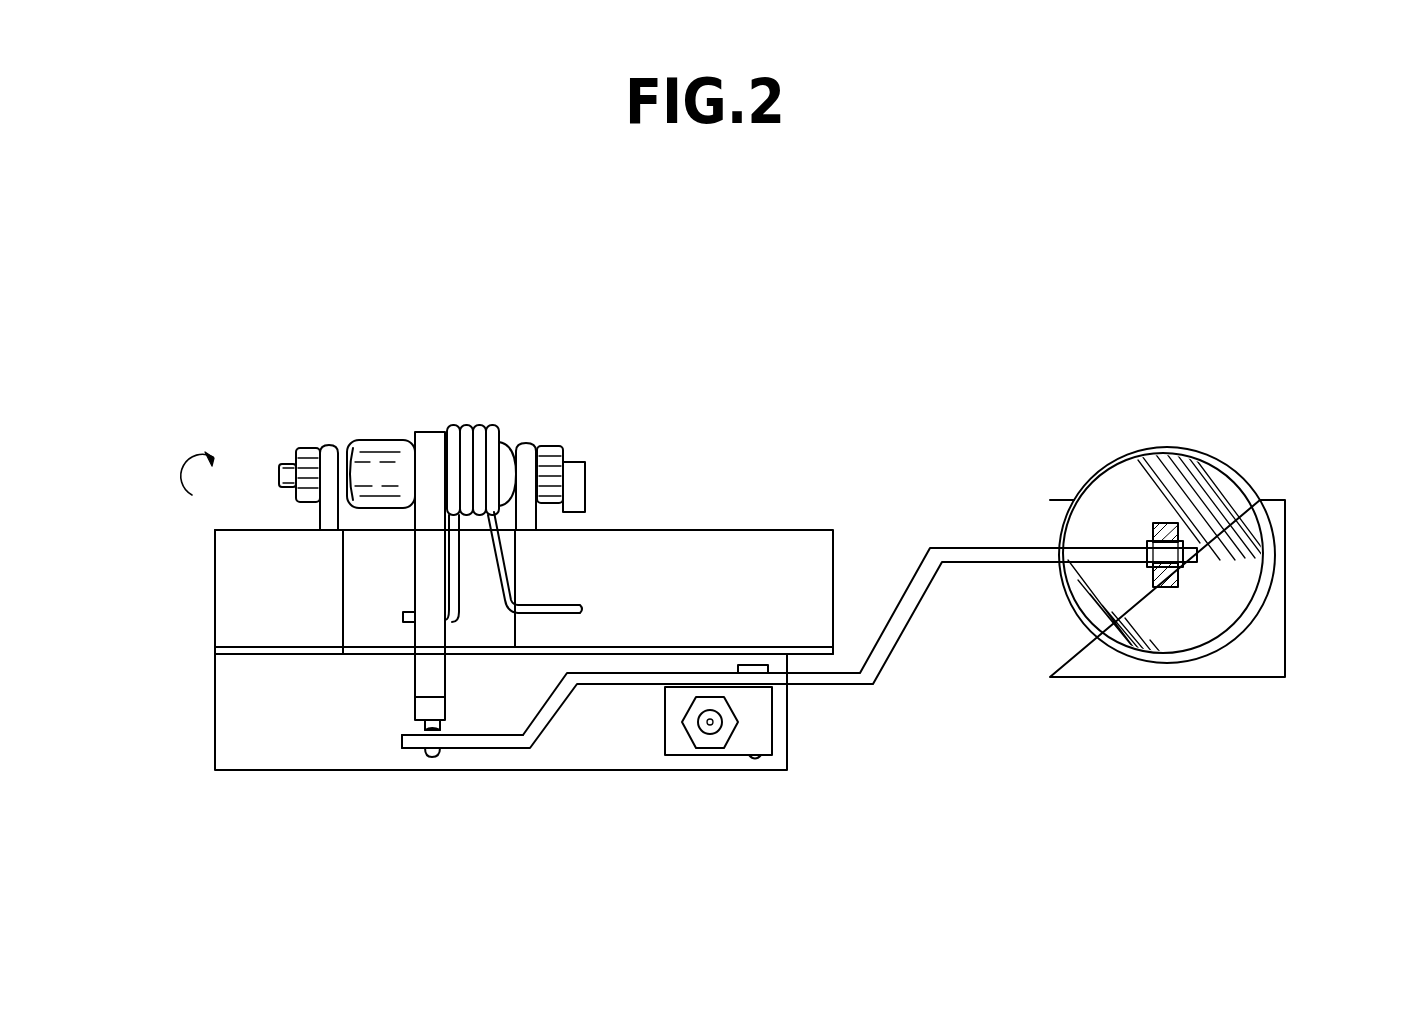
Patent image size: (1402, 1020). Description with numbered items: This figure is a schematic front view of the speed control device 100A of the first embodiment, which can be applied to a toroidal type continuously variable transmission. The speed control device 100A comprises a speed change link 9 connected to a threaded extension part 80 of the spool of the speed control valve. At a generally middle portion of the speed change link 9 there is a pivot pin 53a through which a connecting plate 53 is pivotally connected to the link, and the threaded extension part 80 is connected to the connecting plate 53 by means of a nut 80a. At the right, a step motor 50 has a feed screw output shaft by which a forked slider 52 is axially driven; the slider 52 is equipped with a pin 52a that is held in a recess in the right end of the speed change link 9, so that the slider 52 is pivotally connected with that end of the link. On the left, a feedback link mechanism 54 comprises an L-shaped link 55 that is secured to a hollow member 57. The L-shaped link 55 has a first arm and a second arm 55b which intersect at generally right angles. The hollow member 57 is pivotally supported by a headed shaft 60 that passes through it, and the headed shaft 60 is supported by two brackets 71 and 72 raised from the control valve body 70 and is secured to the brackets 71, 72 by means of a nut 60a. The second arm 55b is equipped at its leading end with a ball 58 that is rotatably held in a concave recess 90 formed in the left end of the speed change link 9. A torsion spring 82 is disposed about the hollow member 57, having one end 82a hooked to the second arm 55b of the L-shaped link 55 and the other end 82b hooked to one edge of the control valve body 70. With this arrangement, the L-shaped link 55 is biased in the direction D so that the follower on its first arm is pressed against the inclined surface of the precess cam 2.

The speed control device 100A is at (948, 195).
The precess cam 2 is at (582, 460).
The speed change link 9 is at (963, 553).
The step motor 50 is at (1223, 457).
The forked slider 52 is at (1163, 525).
The pin 52a is at (1183, 563).
The connecting plate 53 is at (737, 747).
The pivot pin 53a is at (757, 758).
The feedback link mechanism 54 is at (364, 425).
The L-shaped link 55 is at (435, 424).
The second arm 55b is at (417, 697).
The hollow member 57 is at (393, 437).
The ball 58 is at (432, 757).
The headed shaft 60 is at (280, 462).
The nut 60a is at (303, 448).
The control valve body 70 is at (790, 530).
The bracket 71 is at (330, 443).
The bracket 72 is at (530, 440).
The extension part 80 is at (705, 722).
The nut 80a is at (710, 722).
The torsion spring 82 is at (488, 427).
The one end of torsion spring 82a is at (405, 617).
The other end of torsion spring 82b is at (580, 608).
The concave recess 90 is at (400, 742).
The biasing direction D is at (188, 470).